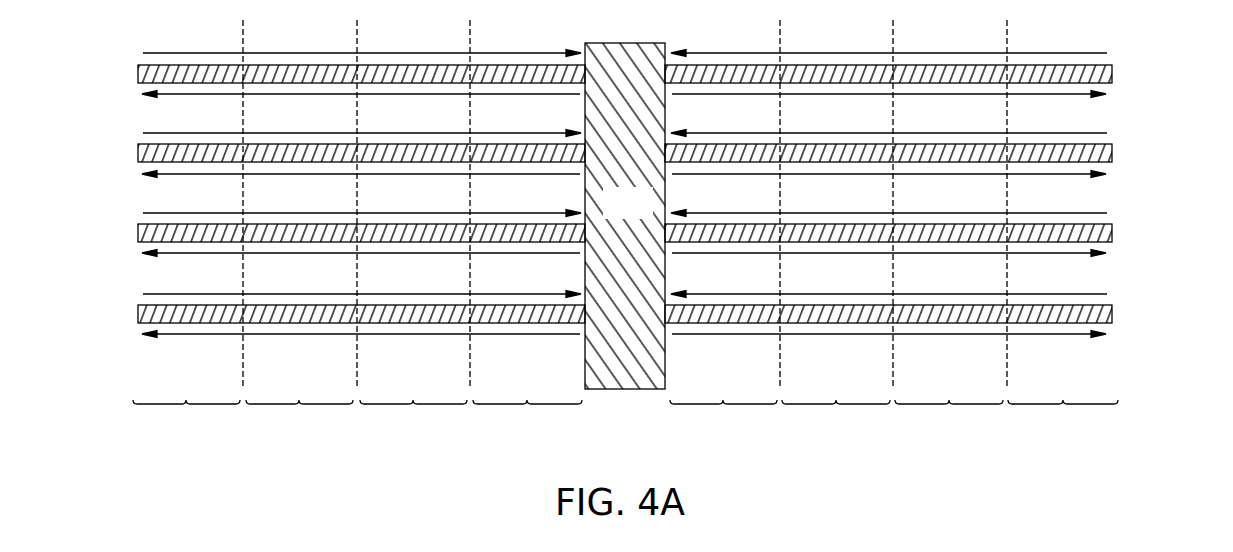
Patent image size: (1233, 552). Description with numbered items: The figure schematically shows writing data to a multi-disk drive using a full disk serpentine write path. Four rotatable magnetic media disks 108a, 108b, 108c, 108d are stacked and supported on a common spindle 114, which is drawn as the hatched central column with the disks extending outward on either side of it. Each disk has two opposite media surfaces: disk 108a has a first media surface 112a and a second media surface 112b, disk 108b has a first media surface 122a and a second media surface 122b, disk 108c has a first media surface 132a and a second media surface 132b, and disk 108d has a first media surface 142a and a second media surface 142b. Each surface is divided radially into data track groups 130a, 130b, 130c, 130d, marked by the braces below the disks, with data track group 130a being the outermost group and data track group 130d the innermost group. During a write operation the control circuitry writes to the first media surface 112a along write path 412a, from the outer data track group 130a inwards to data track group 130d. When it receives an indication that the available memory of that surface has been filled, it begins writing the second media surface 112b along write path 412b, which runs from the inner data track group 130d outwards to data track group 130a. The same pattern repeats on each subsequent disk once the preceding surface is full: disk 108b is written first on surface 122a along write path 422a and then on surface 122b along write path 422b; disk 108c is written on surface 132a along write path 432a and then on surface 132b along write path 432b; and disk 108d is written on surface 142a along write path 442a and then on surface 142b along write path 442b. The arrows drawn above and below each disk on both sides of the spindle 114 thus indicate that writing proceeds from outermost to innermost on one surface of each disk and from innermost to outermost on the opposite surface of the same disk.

The disk 108a is at (138, 73).
The disk 108b is at (138, 152).
The disk 108c is at (138, 232).
The disk 108d is at (138, 313).
The spindle 114 is at (650, 215).
The first media surface 112a is at (366, 65).
The second media surface 112b is at (576, 84).
The first media surface 122a is at (366, 144).
The second media surface 122b is at (576, 163).
The first media surface 132a is at (366, 224).
The second media surface 132b is at (576, 243).
The first media surface 142a is at (366, 305).
The second media surface 142b is at (576, 324).
The write path 412a is at (1088, 55).
The write path 412b is at (1106, 96).
The write path 422a is at (1088, 135).
The write path 422b is at (1106, 176).
The write path 432a is at (1088, 215).
The write path 432b is at (1106, 255).
The write path 442a is at (1088, 296).
The write path 442b is at (1106, 336).
The data track group 130a is at (625, 418).
The data track group 130b is at (624, 418).
The data track group 130c is at (625, 418).
The data track group 130d is at (625, 418).